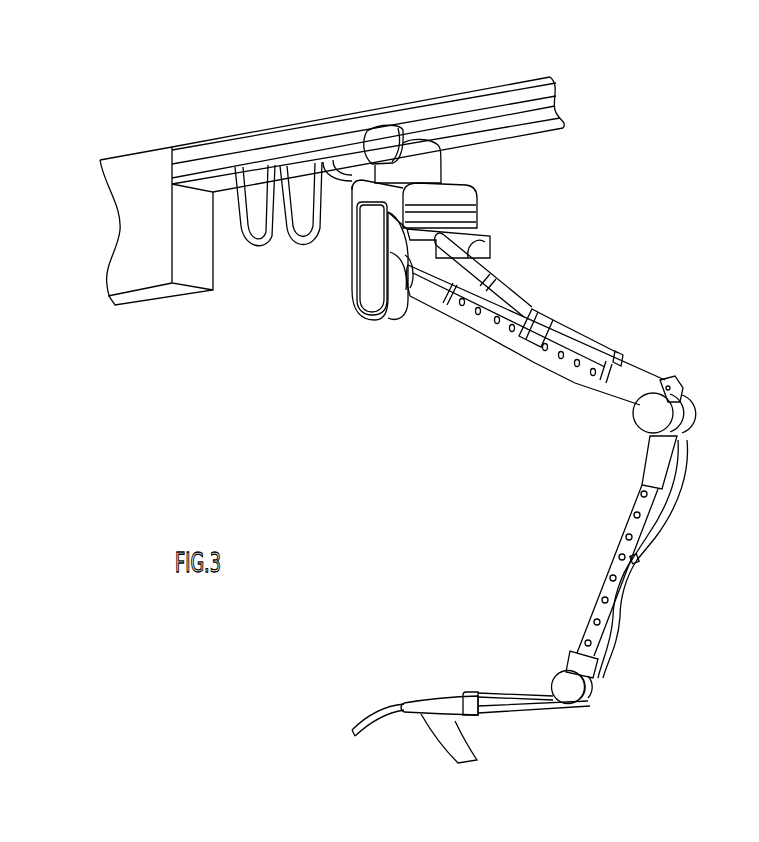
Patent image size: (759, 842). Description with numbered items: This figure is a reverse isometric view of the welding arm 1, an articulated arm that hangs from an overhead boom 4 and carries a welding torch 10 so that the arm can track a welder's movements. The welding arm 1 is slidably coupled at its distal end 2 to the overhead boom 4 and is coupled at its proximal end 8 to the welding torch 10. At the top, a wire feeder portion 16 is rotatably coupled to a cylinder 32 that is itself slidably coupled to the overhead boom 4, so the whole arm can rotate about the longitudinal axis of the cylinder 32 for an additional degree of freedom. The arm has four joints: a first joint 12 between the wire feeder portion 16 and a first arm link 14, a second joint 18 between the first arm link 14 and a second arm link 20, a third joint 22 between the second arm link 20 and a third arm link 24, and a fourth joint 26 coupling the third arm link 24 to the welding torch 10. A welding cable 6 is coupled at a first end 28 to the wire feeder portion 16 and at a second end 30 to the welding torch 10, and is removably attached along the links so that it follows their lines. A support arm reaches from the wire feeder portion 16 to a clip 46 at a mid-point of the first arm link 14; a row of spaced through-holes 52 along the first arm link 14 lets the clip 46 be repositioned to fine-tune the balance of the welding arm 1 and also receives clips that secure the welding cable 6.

The welding arm 1 is at (697, 310).
The distal end 2 is at (441, 169).
The overhead boom 4 is at (523, 128).
The welding cable 6 is at (259, 251).
The proximal end 8 is at (482, 708).
The welding torch 10 is at (405, 694).
The first joint 12 is at (390, 328).
The first arm link 14 is at (500, 338).
The wire feeder portion 16 is at (470, 197).
The second joint 18 is at (705, 399).
The second arm link 20 is at (628, 525).
The third joint 22 is at (588, 710).
The third arm link 24 is at (520, 688).
The fourth joint 26 is at (478, 693).
The first end 28 is at (480, 245).
The second end 30 is at (472, 712).
The cylinder 32 is at (413, 167).
The clip 46 is at (540, 312).
The through-holes 52 is at (461, 305).